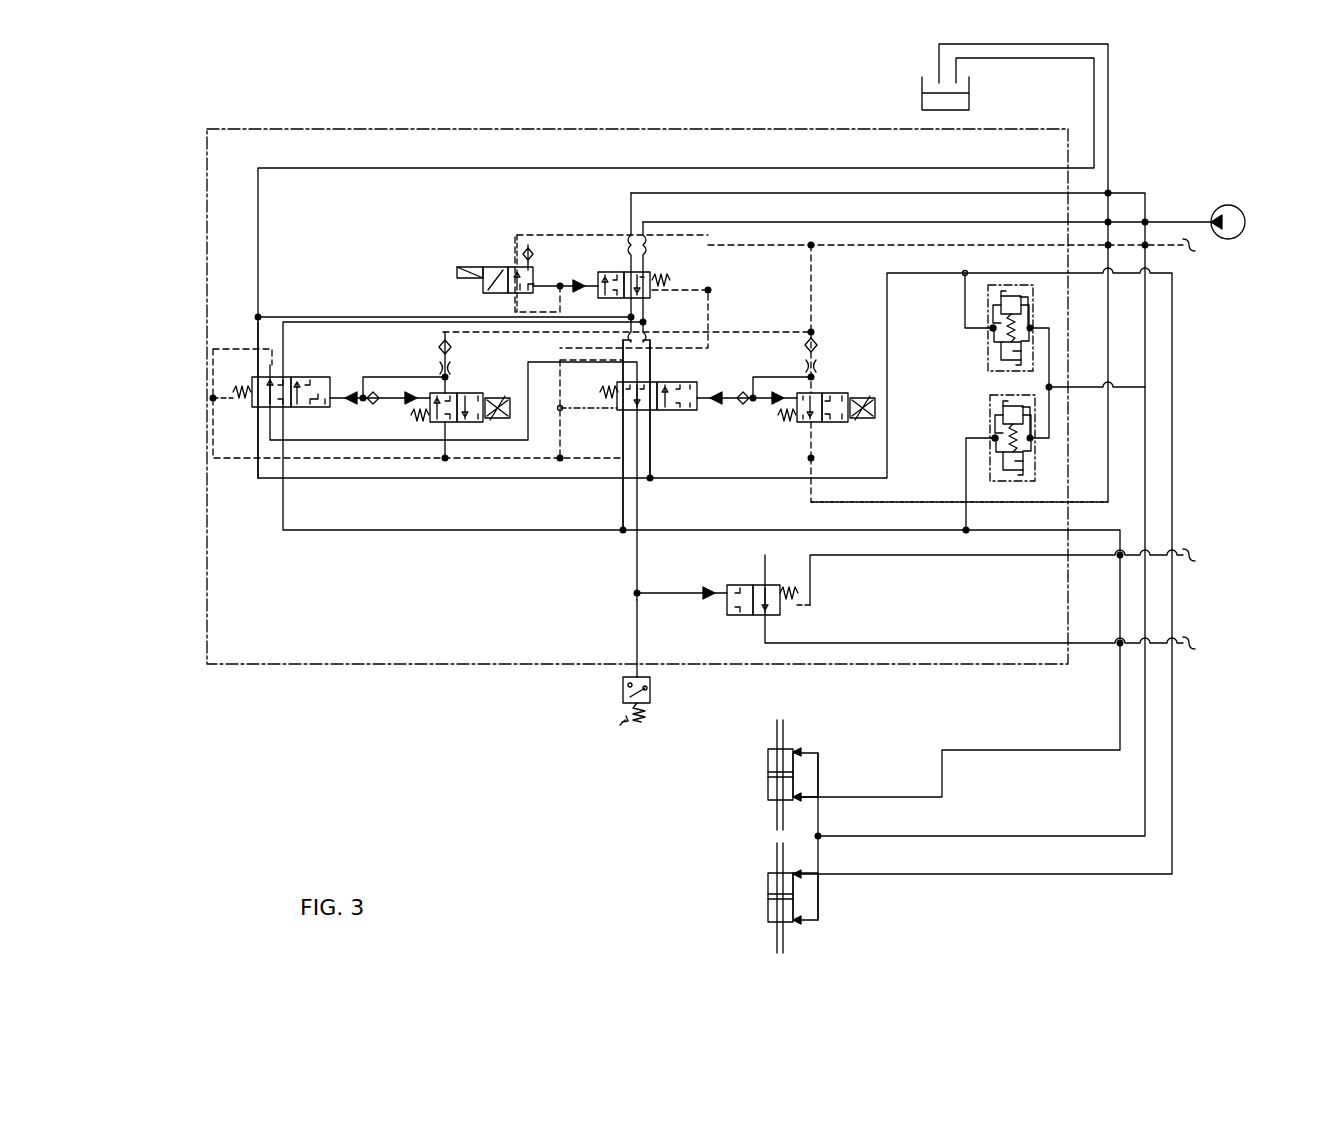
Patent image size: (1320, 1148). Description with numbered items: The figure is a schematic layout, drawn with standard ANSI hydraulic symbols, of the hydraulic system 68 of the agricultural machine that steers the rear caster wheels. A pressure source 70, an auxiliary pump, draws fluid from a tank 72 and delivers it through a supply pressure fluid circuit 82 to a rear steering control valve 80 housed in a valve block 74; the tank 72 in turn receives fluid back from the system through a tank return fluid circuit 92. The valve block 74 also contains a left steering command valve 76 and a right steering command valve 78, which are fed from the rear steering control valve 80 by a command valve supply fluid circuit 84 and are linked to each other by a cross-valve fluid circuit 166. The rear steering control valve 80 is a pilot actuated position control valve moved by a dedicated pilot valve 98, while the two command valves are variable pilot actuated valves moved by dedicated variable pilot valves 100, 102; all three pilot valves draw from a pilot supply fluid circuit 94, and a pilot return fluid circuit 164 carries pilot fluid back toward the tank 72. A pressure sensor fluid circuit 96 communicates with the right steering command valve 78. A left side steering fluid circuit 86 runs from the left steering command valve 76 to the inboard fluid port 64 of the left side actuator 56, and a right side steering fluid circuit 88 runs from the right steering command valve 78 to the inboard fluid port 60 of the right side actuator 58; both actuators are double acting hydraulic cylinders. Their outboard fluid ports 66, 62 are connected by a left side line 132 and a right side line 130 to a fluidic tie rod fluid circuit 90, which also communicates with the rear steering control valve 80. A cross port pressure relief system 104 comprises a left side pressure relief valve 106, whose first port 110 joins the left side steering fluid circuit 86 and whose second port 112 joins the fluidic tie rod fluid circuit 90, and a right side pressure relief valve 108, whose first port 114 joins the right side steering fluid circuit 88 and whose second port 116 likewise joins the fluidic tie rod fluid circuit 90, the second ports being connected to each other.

The left side actuator 56 is at (768, 915).
The right side actuator 58 is at (768, 765).
The inboard fluid port 60 is at (797, 797).
The outboard fluid port 62 is at (793, 752).
The inboard fluid port 64 is at (798, 875).
The outboard fluid port 66 is at (793, 920).
The hydraulic system 68 is at (366, 97).
The pressure source 70 is at (1234, 212).
The tank 72 is at (922, 86).
The valve block 74 is at (207, 611).
The left steering command valve 76 is at (303, 407).
The right steering command valve 78 is at (700, 380).
The rear steering control valve 80 is at (623, 270).
The supply pressure fluid circuit 82 is at (760, 222).
The command valve supply fluid circuit 84 is at (645, 302).
The left side steering fluid circuit 86 is at (353, 478).
The right side steering fluid circuit 88 is at (658, 530).
The fluidic tie rod fluid circuit 90 is at (662, 193).
The tank return fluid circuit 92 is at (318, 168).
The pilot supply fluid circuit 94 is at (840, 245).
The pressure sensor fluid circuit 96 is at (637, 573).
The pilot valve 98 is at (485, 267).
The variable pilot valve 100 is at (457, 388).
The variable pilot valve 102 is at (827, 422).
The cross port pressure relief system 104 is at (1047, 315).
The left side pressure relief valve 106 is at (985, 352).
The right side pressure relief valve 108 is at (1037, 473).
The first port 110 is at (993, 328).
The second port 112 is at (1033, 333).
The first port 114 is at (995, 438).
The second port 116 is at (1035, 443).
The right side line 130 is at (818, 785).
The left side line 132 is at (815, 875).
The pilot return fluid circuit 164 is at (512, 462).
The cross-valve fluid circuit 166 is at (475, 442).